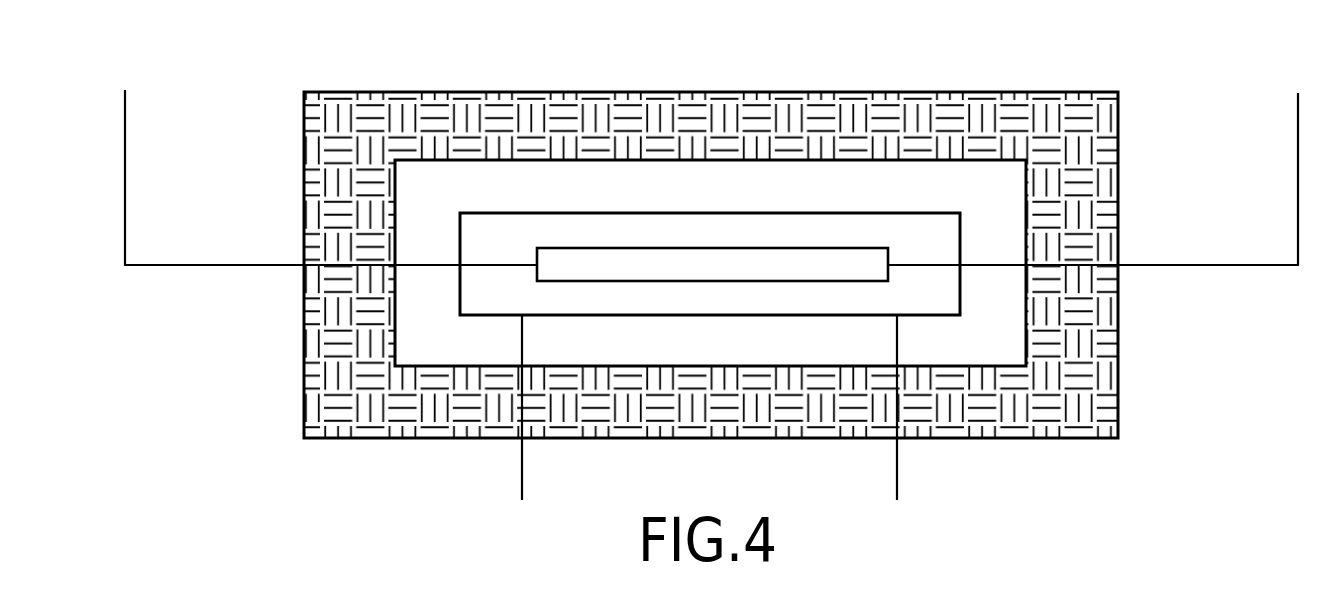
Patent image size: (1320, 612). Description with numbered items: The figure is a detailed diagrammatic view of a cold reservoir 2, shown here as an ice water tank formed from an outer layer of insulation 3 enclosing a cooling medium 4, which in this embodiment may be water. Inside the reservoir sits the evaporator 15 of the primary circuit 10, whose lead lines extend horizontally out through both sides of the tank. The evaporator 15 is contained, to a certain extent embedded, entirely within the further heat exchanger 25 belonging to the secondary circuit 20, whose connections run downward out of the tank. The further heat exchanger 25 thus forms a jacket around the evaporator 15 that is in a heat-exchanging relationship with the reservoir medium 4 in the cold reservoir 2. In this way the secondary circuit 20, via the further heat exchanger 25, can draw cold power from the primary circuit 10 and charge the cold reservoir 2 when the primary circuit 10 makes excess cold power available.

The cold reservoir 2 is at (735, 225).
The insulation 3 is at (1107, 385).
The cooling medium 4 is at (543, 168).
The primary circuit 10 is at (103, 220).
The evaporator 15 is at (810, 247).
The secondary circuit 20 is at (503, 520).
The further heat exchanger 25 is at (634, 212).